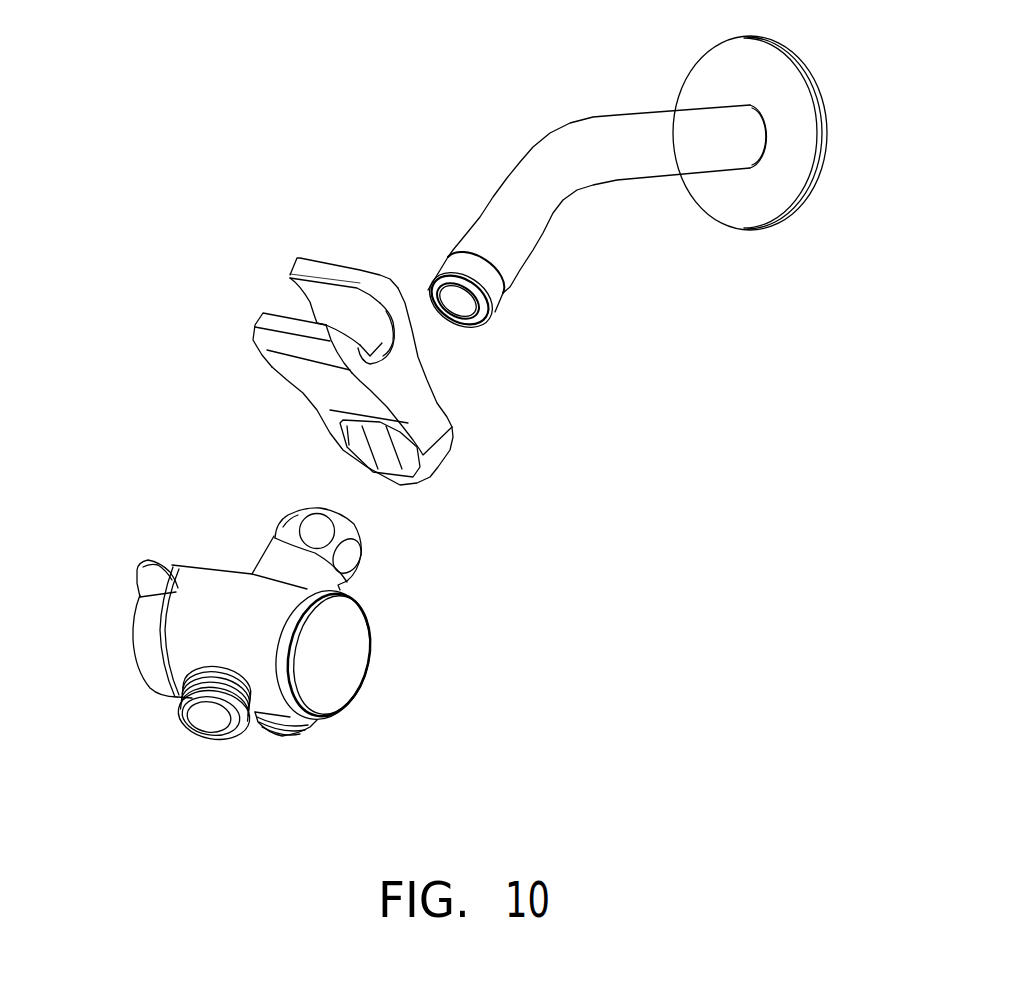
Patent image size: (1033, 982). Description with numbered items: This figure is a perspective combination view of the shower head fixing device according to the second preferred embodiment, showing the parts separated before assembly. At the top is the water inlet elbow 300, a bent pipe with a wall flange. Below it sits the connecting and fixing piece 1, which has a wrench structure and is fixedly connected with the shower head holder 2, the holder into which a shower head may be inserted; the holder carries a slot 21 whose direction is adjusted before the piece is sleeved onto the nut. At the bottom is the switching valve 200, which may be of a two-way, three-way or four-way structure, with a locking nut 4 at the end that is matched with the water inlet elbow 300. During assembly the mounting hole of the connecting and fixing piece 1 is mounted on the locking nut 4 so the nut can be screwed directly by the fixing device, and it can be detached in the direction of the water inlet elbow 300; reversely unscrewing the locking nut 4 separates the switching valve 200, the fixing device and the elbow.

The water inlet elbow 300 is at (502, 228).
The connecting and fixing piece 1 is at (430, 423).
The shower head holder 2 is at (277, 338).
The slot 21 is at (343, 307).
The switching valve 200 is at (193, 642).
The locking nut 4 is at (347, 560).